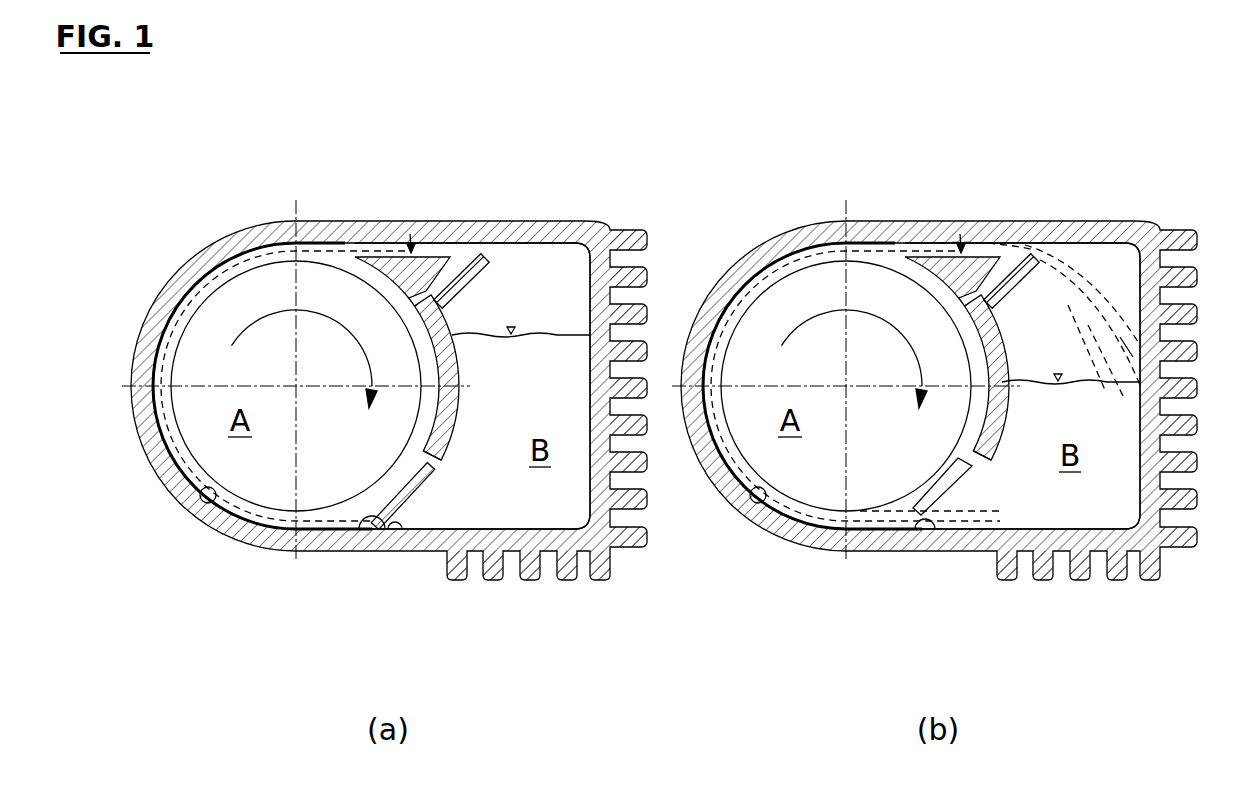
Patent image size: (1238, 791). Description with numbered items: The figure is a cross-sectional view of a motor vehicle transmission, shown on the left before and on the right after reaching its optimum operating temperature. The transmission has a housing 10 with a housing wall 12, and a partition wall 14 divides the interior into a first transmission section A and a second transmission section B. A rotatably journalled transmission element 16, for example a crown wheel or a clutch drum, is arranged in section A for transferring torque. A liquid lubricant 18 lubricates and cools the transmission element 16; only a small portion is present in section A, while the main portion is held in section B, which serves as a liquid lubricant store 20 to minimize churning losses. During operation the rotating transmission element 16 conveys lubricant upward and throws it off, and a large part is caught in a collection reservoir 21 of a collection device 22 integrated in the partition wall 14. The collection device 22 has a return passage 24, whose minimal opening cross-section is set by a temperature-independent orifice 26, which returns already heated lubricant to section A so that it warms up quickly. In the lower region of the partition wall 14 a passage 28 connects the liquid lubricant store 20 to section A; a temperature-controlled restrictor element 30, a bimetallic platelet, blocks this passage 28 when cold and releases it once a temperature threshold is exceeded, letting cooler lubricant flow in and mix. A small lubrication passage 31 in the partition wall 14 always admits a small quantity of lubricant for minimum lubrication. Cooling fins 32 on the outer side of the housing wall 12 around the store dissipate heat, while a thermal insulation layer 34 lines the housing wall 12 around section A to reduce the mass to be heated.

The housing 10 is at (288, 550).
The housing wall 12 is at (260, 540).
The partition wall 14 is at (453, 433).
The transmission element 16 is at (248, 268).
The liquid lubricant 18 is at (343, 253).
The liquid lubricant store 20 is at (523, 513).
The collection reservoir 21 is at (426, 248).
The collection device 22 is at (409, 232).
The return passage 24 is at (447, 273).
The orifice 26 is at (410, 306).
The passage 28 is at (404, 535).
The temperature-controlled restrictor element 30 is at (360, 535).
The lubrication passage 31 is at (438, 462).
The cooling fins 32 is at (608, 520).
The thermal insulation layer 34 is at (175, 502).